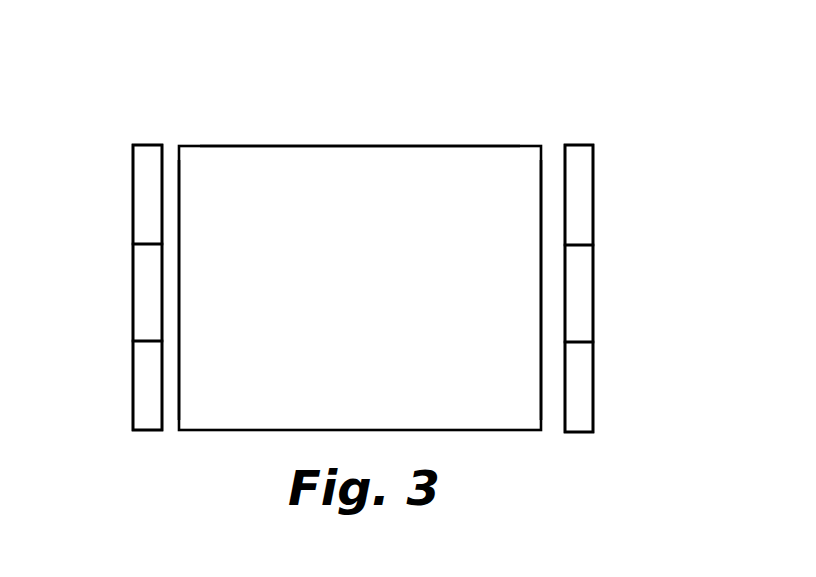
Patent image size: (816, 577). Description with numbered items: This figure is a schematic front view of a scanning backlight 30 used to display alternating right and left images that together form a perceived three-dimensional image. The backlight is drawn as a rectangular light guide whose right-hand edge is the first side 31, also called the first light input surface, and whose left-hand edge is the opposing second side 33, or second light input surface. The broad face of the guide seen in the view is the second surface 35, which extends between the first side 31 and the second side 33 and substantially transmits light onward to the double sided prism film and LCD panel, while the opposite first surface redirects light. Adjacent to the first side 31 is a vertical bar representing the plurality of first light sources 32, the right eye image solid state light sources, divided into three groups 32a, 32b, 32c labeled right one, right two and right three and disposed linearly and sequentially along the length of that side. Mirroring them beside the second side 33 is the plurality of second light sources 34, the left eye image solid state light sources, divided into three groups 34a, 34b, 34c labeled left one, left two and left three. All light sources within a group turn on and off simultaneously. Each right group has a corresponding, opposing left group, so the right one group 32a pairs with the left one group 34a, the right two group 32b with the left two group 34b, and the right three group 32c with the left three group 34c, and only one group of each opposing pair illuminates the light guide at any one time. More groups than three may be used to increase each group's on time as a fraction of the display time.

The scanning backlight 30 is at (452, 114).
The first side 31 is at (541, 168).
The second side 33 is at (178, 168).
The second surface 35 is at (331, 170).
The plurality of first light sources 32 is at (582, 445).
The first light source group RIGHT 1 32a is at (584, 163).
The first light source group RIGHT 2 32b is at (584, 272).
The first light source group RIGHT 3 32c is at (584, 368).
The plurality of second light sources 34 is at (147, 443).
The second light source group LEFT 1 34a is at (134, 160).
The second light source group LEFT 2 34b is at (134, 270).
The second light source group LEFT 3 34c is at (134, 368).